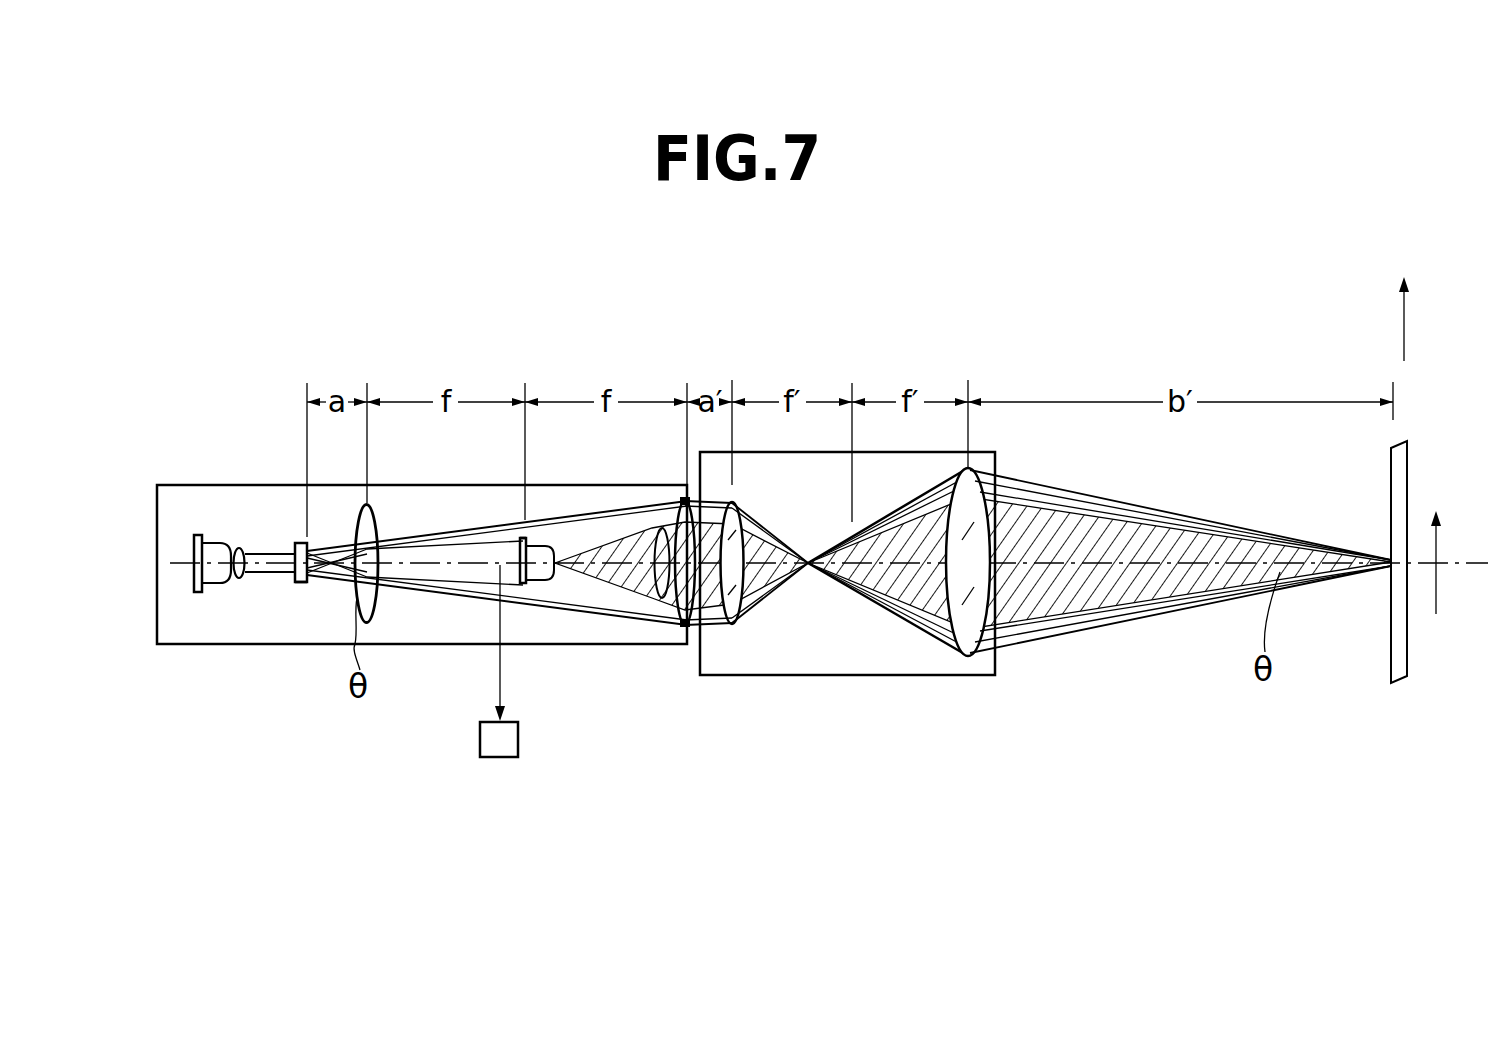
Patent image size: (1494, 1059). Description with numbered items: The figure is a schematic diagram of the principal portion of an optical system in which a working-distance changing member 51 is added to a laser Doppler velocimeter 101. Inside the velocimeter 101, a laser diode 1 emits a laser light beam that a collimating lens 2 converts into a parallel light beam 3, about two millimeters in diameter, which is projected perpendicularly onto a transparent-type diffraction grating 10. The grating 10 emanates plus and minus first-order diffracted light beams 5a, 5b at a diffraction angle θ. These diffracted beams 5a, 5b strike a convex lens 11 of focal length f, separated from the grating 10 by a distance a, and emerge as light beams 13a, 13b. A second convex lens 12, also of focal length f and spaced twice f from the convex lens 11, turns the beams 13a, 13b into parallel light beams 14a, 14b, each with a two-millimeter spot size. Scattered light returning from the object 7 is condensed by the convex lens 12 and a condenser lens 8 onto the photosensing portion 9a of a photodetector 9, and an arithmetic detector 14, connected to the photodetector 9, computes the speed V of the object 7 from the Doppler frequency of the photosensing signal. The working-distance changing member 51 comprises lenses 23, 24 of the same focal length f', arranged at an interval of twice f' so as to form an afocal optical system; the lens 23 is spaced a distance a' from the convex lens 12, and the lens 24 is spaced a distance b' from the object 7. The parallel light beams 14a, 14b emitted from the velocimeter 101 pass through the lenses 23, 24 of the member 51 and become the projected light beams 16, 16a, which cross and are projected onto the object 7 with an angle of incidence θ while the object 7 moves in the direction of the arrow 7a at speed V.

The laser Doppler velocimeter 101 is at (192, 485).
The laser diode 1 is at (199, 593).
The collimating lens 2 is at (240, 547).
The parallel light beam 3 is at (248, 584).
The diffraction grating 10 is at (262, 573).
The diffracted light beam 5a is at (303, 543).
The diffracted light beam 5b is at (301, 583).
The convex lens 11 is at (367, 623).
The light beam 13a is at (413, 533).
The light beam 13b is at (420, 603).
The photodetector 9 is at (529, 583).
The photosensing portion 9a is at (540, 540).
The condenser lens 8 is at (659, 598).
The convex lens 12 is at (683, 625).
The parallel light beam 14a is at (686, 498).
The parallel light beam 14b is at (686, 630).
The arithmetic detector 14 is at (500, 757).
The lens 23 is at (734, 625).
The working-distance changing member 51 is at (862, 675).
The lens 24 is at (966, 656).
The upper projected beam 16 is at (1149, 507).
The light beam 16a is at (1148, 612).
The object 7 is at (1400, 665).
The arrow 7a is at (1436, 616).